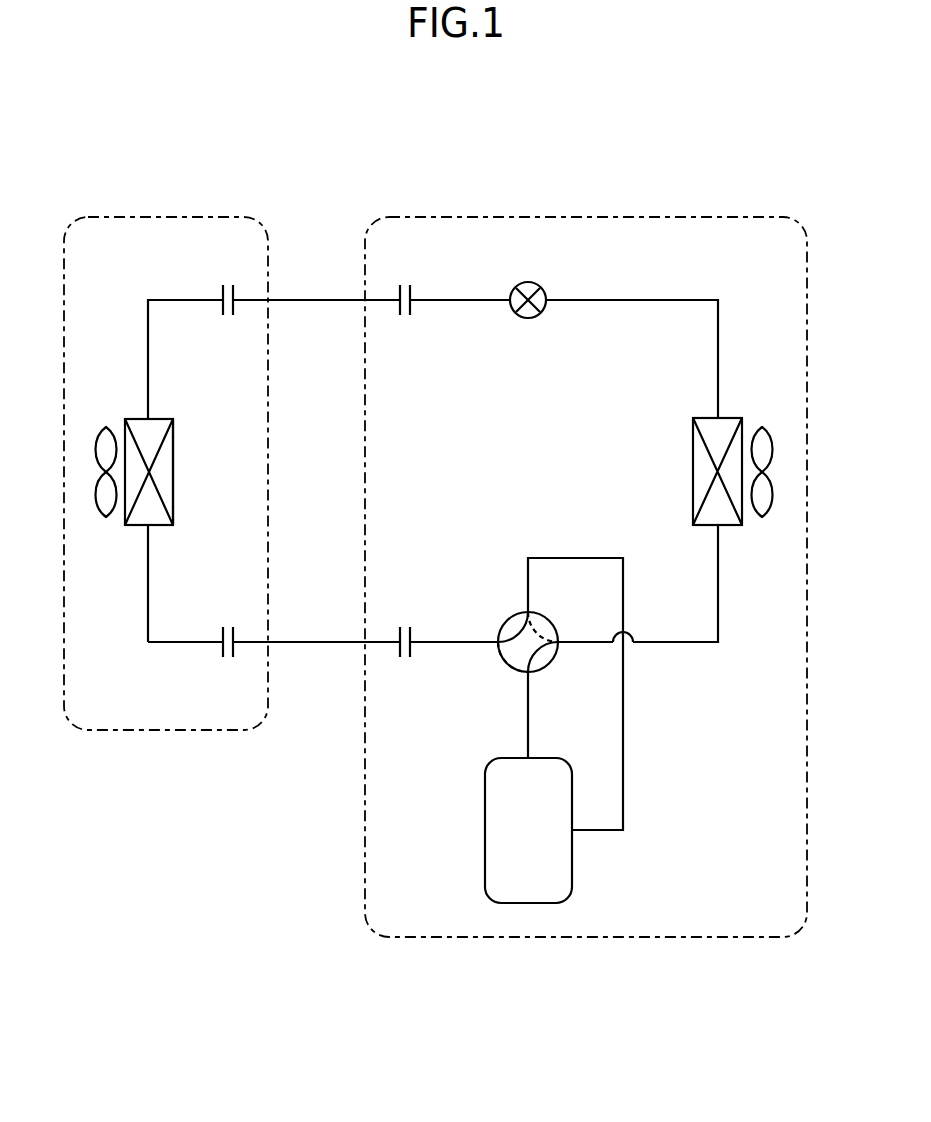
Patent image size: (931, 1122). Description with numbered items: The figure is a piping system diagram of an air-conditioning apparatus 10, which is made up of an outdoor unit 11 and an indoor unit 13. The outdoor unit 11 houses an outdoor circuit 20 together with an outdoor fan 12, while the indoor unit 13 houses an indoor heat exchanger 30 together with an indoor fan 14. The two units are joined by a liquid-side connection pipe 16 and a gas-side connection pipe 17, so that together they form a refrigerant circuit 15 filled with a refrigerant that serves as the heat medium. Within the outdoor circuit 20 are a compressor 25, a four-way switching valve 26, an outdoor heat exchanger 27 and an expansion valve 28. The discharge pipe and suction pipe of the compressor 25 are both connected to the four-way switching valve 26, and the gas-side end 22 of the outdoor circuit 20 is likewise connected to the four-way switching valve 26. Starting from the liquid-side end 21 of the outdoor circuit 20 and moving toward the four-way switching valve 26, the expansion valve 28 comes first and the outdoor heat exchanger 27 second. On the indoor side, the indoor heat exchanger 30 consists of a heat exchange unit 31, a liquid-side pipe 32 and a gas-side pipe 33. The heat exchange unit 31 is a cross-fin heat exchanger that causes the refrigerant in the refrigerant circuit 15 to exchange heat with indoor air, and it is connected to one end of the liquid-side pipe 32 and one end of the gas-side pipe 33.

The air-conditioning apparatus 10 is at (88, 201).
The outdoor unit 11 is at (667, 217).
The outdoor fan 12 is at (760, 426).
The indoor unit 13 is at (130, 216).
The indoor fan 14 is at (106, 426).
The refrigerant circuit 15 is at (301, 299).
The liquid-side connection pipe 16 is at (313, 303).
The gas-side connection pipe 17 is at (317, 645).
The outdoor circuit 20 is at (671, 298).
The liquid-side end 21 is at (411, 306).
The gas-side end 22 is at (411, 652).
The compressor 25 is at (484, 829).
The four-way switching valve 26 is at (500, 624).
The outdoor heat exchanger 27 is at (692, 461).
The expansion valve 28 is at (529, 320).
The indoor heat exchanger 30 is at (174, 431).
The heat exchange unit 31 is at (175, 461).
The liquid-side pipe 32 is at (173, 298).
The gas-side pipe 33 is at (178, 645).